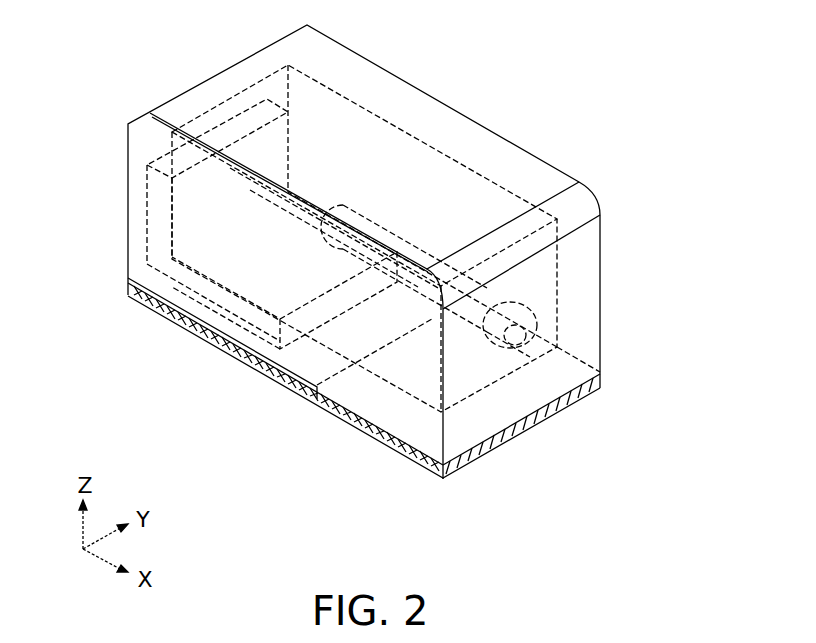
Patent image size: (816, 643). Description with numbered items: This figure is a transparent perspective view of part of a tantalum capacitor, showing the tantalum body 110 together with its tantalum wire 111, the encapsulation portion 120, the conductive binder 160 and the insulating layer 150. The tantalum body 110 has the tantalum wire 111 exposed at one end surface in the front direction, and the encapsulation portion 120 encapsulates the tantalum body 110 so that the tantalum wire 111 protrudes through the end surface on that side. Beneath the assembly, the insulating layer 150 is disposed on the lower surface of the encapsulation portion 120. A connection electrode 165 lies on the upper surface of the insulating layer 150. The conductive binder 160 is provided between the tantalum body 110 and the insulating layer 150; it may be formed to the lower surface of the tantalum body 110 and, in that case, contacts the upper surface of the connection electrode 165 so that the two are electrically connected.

The tantalum body 110 is at (318, 400).
The tantalum wire 111 is at (537, 320).
The encapsulation portion 120 is at (430, 95).
The insulating layer 150 is at (190, 327).
The conductive binder 160 is at (160, 222).
The connection electrode 165 is at (247, 357).